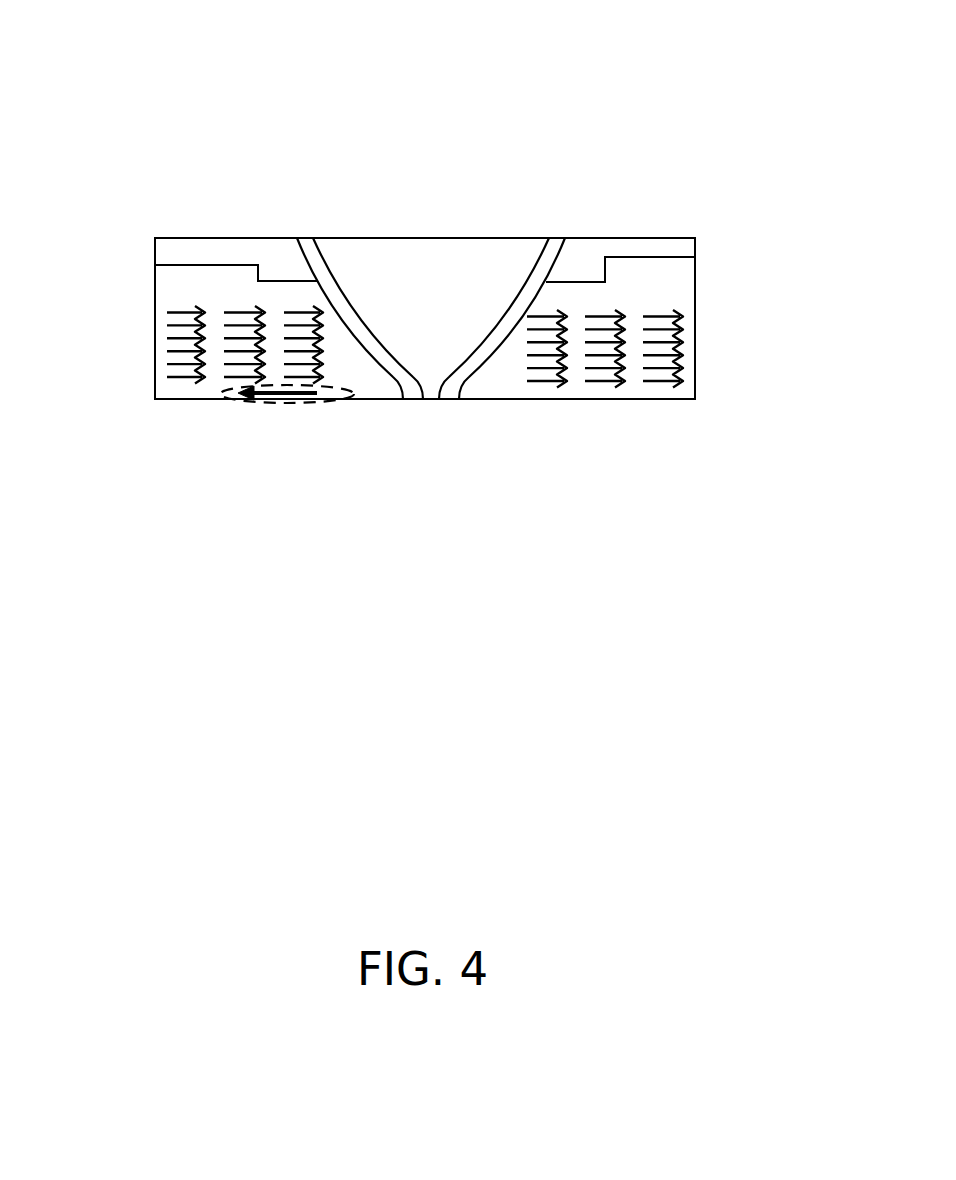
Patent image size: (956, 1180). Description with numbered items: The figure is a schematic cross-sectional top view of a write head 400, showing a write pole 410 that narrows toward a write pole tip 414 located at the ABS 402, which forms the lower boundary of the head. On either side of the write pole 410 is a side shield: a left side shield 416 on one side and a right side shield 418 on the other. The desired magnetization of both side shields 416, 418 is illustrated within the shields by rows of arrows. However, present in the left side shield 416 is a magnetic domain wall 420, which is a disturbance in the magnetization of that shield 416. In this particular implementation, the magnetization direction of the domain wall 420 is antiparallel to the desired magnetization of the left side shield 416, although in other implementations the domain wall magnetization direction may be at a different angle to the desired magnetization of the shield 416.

The write head 400 is at (165, 117).
The ABS 402 is at (392, 400).
The write pole 410 is at (448, 286).
The write pole tip 414 is at (432, 400).
The left side shield 416 is at (155, 348).
The right side shield 418 is at (695, 322).
The magnetic domain wall 420 is at (243, 397).